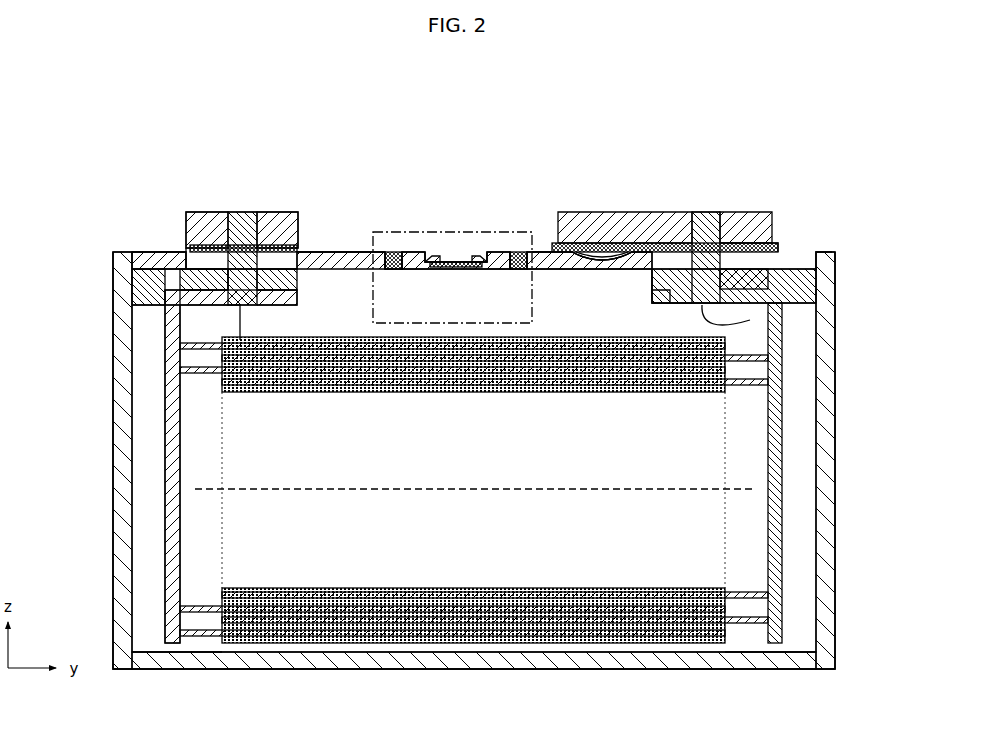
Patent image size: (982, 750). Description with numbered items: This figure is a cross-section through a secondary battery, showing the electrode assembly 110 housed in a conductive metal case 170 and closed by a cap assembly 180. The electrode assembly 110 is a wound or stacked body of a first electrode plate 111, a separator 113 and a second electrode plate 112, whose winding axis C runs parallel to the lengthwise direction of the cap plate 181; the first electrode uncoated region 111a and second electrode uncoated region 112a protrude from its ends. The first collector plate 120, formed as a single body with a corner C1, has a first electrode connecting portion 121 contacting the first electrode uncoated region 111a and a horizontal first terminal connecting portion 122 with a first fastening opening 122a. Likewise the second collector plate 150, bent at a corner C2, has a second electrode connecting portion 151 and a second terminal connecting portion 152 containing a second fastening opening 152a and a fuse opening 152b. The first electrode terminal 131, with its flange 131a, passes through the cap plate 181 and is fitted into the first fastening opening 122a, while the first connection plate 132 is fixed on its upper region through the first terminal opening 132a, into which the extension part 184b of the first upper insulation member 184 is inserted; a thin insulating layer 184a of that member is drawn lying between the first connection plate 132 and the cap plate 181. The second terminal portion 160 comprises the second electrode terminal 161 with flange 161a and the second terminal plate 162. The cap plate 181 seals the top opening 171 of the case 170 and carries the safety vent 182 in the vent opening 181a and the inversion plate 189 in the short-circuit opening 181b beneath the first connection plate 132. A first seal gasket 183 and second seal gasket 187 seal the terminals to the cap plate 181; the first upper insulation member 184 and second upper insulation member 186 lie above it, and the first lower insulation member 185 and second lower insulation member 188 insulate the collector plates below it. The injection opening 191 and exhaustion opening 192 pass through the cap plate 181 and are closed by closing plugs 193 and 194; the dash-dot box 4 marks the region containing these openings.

The vent unit 4 is at (442, 232).
The electrode assembly 110 is at (318, 652).
The first electrode plate 111 is at (640, 653).
The first electrode uncoated region 111a is at (745, 652).
The second electrode plate 112 is at (430, 640).
The second electrode uncoated region 112a is at (200, 640).
The separator 113 is at (522, 640).
The first collector plate 120 is at (784, 440).
The first electrode connecting portion 121 is at (782, 515).
The first terminal connecting portion 122 is at (762, 262).
The first fastening opening 122a is at (756, 322).
The first electrode terminal 131 is at (706, 222).
The flange 131a is at (662, 286).
The first connection plate 132 is at (566, 214).
The first terminal opening 132a is at (700, 228).
The second collector plate 150 is at (164, 440).
The second electrode connecting portion 151 is at (172, 518).
The second terminal connecting portion 152 is at (200, 288).
The second fastening opening 152a is at (240, 320).
The fuse opening 152b is at (200, 270).
The second terminal portion 160 is at (206, 170).
The second electrode terminal 161 is at (246, 226).
The flange 161a is at (298, 284).
The second terminal plate 162 is at (210, 226).
The case 170 is at (836, 590).
The top opening 171 is at (210, 272).
The cap assembly 180 is at (318, 246).
The cap plate 181 is at (346, 256).
The vent opening 181a is at (440, 268).
The short-circuit opening 181b is at (562, 266).
The safety vent 182 is at (468, 258).
The first seal gasket 183 is at (780, 248).
The first upper insulation member 184 is at (780, 246).
The upper insulating layer 184a is at (608, 246).
The extension part 184b is at (746, 236).
The first lower insulation member 185 is at (762, 282).
The second upper insulation member 186 is at (204, 250).
The second seal gasket 187 is at (190, 246).
The second lower insulation member 188 is at (150, 278).
The inversion plate 189 is at (600, 262).
The injection opening 191 is at (392, 270).
The exhaustion opening 192 is at (516, 270).
The closing plug 193 is at (392, 254).
The closing plug 194 is at (518, 254).
The winding axis C is at (600, 487).
The corner C1 is at (775, 292).
The corner C2 is at (172, 298).